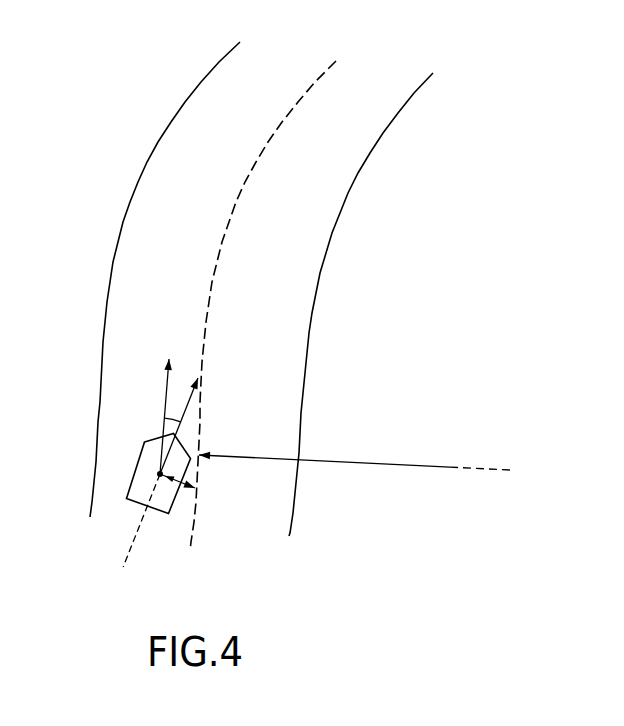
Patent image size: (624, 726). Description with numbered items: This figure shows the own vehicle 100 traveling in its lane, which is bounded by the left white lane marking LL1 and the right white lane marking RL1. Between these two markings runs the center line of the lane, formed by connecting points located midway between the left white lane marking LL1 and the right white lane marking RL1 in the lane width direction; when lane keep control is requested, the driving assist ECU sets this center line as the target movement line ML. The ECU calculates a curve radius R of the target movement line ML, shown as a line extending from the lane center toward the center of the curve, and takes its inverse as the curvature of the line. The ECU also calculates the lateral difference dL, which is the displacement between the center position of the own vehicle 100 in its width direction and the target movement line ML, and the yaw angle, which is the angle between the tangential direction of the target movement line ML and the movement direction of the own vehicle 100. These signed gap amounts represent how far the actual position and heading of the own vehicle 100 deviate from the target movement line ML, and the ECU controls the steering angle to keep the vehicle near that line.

The own vehicle 100 is at (135, 477).
The left white lane marking LL1 is at (100, 365).
The right white lane marking RL1 is at (305, 369).
The target movement line ML is at (229, 222).
The curve radius R is at (354, 474).
The lateral difference dL is at (177, 492).